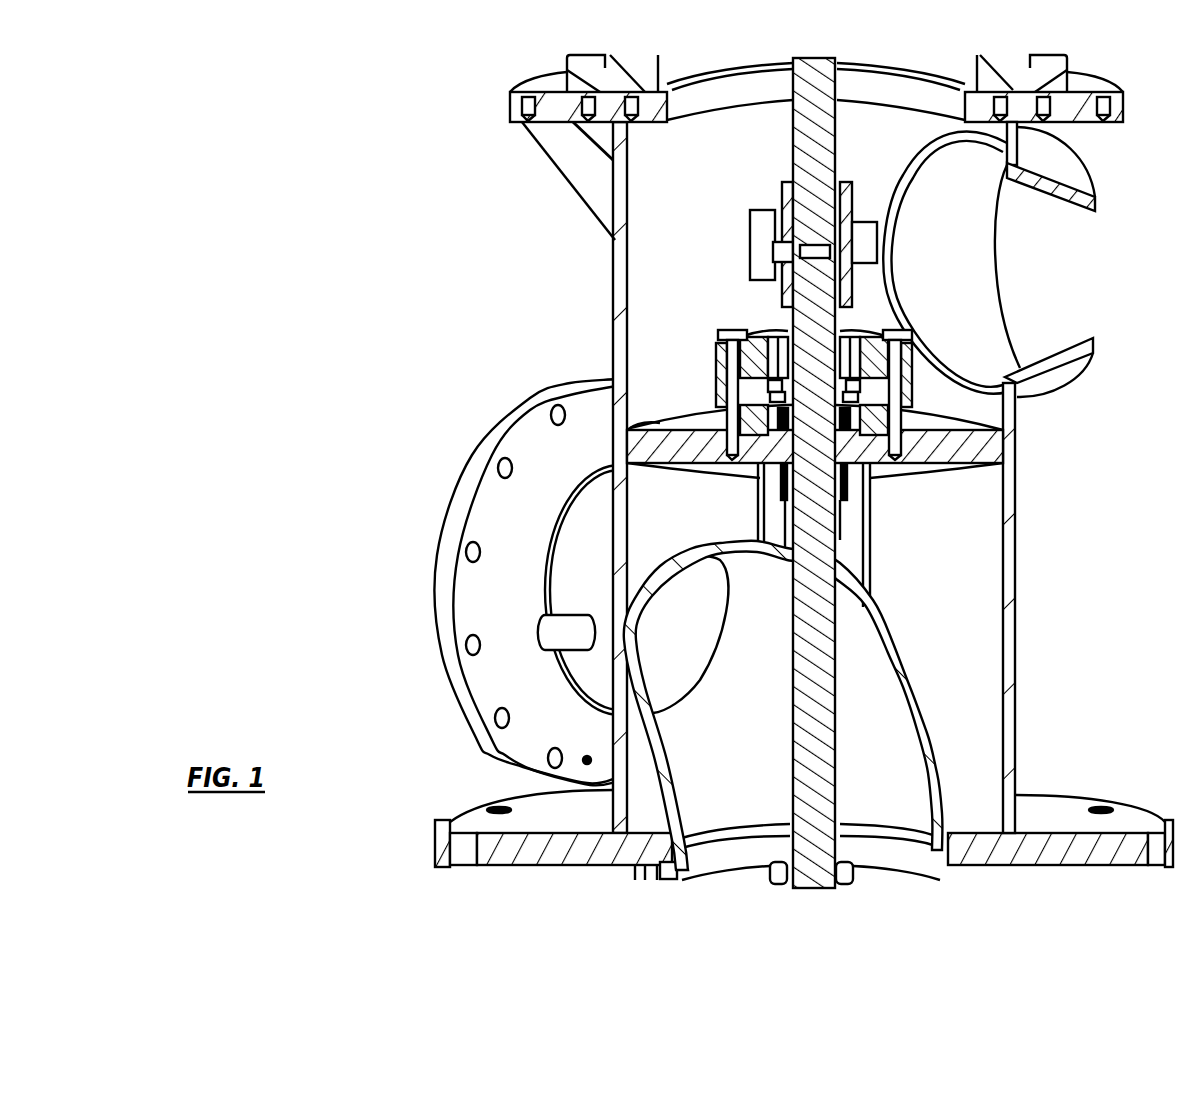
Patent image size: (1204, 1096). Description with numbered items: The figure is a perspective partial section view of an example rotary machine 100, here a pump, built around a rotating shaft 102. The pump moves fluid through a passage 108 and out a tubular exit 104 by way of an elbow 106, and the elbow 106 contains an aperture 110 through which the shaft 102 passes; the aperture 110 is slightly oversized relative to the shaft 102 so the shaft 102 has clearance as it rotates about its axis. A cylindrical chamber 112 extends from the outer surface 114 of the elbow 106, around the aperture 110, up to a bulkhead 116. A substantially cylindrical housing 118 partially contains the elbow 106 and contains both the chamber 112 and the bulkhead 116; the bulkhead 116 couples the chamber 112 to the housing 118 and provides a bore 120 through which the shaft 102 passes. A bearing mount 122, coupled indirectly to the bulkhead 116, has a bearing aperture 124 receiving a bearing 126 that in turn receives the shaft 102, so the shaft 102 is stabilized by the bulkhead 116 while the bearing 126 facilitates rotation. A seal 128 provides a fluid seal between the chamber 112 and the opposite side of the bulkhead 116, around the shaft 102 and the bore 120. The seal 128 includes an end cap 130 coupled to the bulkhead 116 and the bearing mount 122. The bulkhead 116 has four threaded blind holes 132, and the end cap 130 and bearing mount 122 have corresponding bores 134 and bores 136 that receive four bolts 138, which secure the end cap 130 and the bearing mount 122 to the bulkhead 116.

The rotary machine 100 is at (380, 180).
The shaft 102 is at (790, 723).
The tubular exit 104 is at (430, 451).
The elbow 106 is at (698, 517).
The passage 108 is at (685, 738).
The aperture 110 is at (840, 587).
The cylindrical chamber 112 is at (847, 552).
The outer surface 114 is at (750, 530).
The bulkhead 116 is at (880, 467).
The housing 118 is at (1013, 517).
The bore 120 is at (755, 482).
The bearing mount 122 is at (915, 343).
The bearing aperture 124 is at (848, 325).
The bearing 126 is at (928, 400).
The seal 128 is at (692, 401).
The end cap 130 is at (913, 447).
The threaded bolt-receiving blind holes 132 is at (700, 457).
The bores 134 is at (613, 443).
The bores 136 is at (717, 355).
The bolts 138 is at (735, 333).